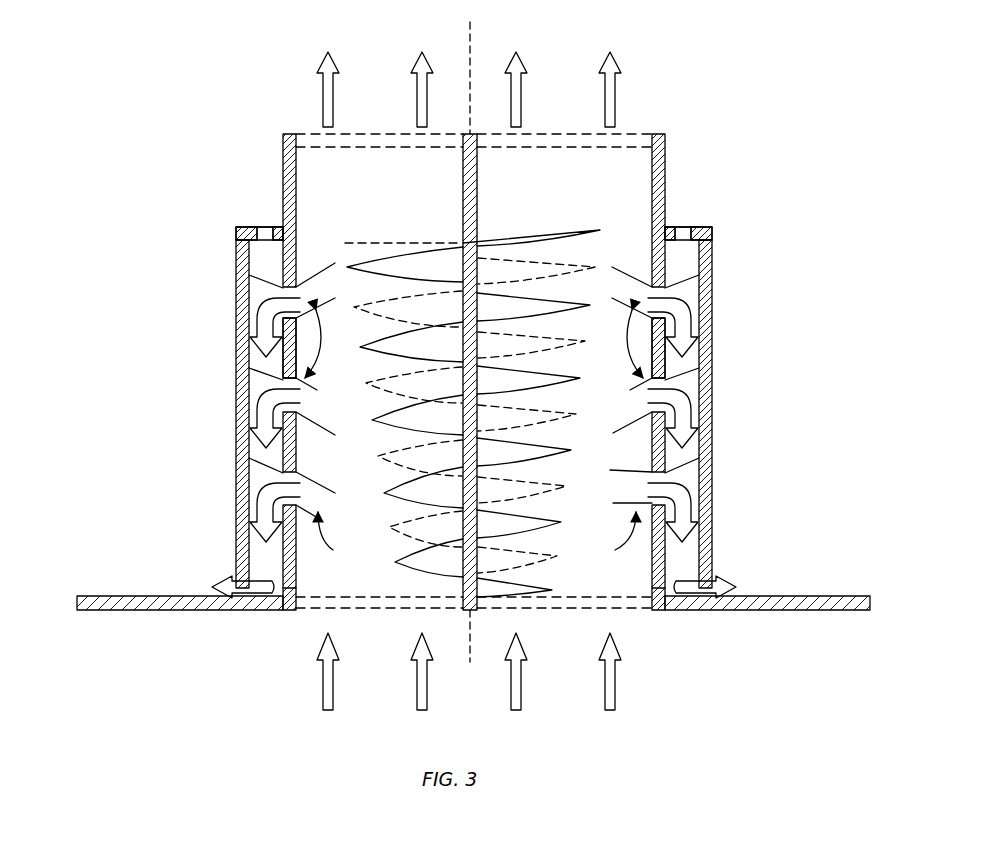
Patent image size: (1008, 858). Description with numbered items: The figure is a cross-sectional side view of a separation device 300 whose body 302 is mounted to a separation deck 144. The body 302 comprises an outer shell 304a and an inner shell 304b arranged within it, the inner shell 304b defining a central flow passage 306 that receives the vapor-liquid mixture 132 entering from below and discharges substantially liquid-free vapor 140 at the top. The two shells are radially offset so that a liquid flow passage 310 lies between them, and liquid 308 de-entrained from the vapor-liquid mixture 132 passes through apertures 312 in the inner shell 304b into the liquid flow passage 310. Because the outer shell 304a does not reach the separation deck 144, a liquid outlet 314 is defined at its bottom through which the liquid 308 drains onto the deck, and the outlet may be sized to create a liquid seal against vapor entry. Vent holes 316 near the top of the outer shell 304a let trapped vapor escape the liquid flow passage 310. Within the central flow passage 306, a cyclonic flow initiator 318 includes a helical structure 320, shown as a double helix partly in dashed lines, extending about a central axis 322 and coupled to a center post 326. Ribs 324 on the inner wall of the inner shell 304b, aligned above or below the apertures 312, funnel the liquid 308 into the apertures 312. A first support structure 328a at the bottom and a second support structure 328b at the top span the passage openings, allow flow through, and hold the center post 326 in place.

The separation device 300 is at (140, 150).
The body 302 is at (233, 398).
The outer shell 304a is at (712, 306).
The inner shell 304b is at (672, 362).
The central flow passage 306 is at (318, 590).
The liquid 308 is at (262, 330).
The liquid flow passage 310 is at (247, 262).
The apertures 312 is at (249, 278).
The liquid outlet 314 is at (255, 590).
The vent holes 316 is at (262, 239).
The cyclonic flow initiator 318 is at (608, 203).
The helical structure 320 is at (380, 462).
The central axis 322 is at (472, 32).
The ribs 324 is at (326, 356).
The center post 326 is at (463, 213).
The first support structure 328a is at (633, 612).
The second support structure 328b is at (636, 133).
The vapor-liquid mixture 132 is at (323, 692).
The vapor 140 is at (322, 88).
The separation deck 144 is at (115, 596).